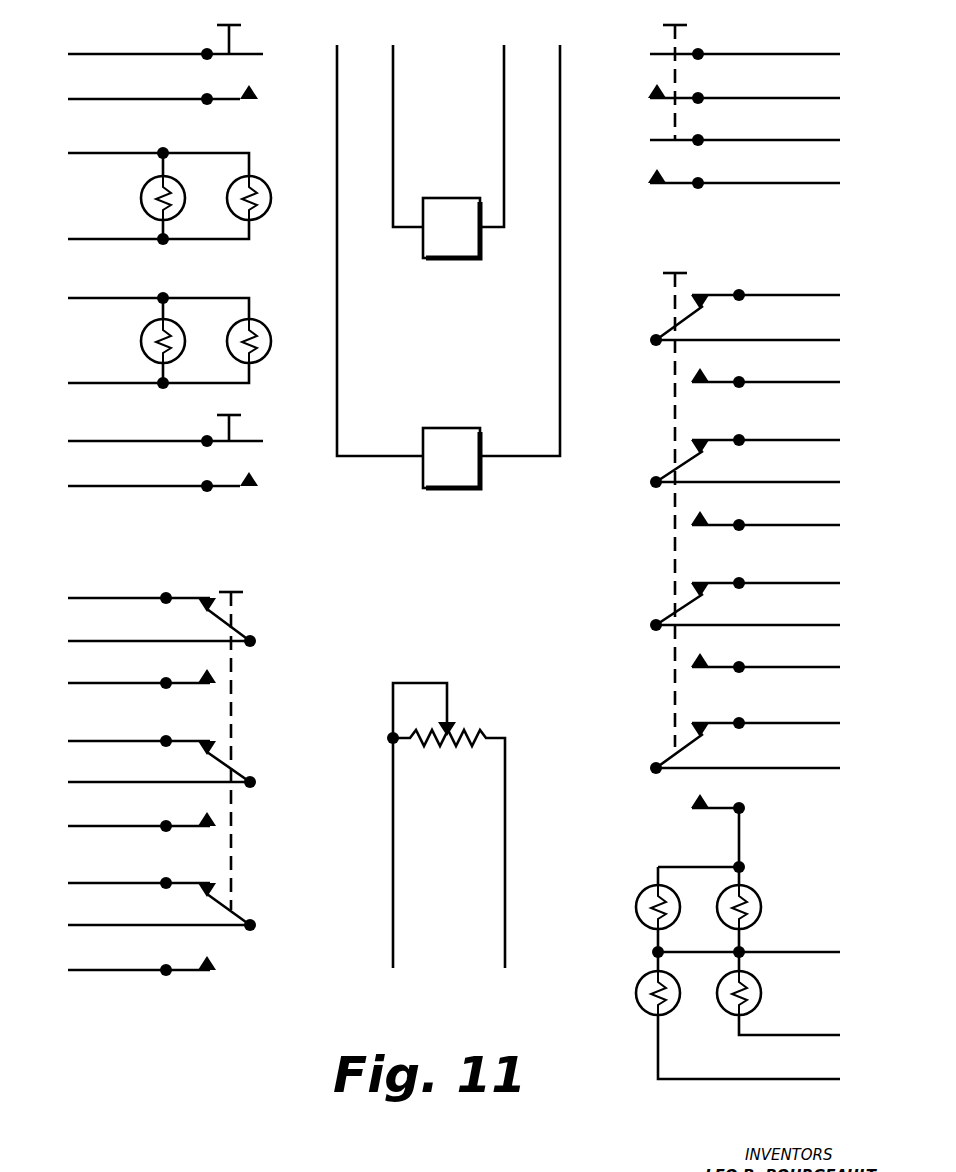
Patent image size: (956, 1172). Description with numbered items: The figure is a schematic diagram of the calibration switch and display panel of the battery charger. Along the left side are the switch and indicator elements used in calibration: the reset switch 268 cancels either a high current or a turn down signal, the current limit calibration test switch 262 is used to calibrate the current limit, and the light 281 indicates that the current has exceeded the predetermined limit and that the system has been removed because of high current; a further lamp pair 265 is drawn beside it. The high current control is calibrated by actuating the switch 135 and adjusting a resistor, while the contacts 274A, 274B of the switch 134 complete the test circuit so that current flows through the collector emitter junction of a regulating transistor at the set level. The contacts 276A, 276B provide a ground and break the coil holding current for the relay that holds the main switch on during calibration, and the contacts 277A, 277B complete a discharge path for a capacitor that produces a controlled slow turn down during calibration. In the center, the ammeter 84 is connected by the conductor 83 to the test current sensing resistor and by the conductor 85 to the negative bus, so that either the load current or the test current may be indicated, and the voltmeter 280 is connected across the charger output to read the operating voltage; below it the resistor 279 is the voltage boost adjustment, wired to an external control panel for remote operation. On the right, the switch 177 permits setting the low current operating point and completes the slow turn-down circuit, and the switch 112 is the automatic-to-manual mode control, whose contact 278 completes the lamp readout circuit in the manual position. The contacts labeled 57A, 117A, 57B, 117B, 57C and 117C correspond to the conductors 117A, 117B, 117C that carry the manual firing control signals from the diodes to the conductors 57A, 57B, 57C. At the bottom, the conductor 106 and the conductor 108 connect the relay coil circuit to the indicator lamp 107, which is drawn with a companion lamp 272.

The reset switch 268 is at (153, 86).
The light 281 is at (143, 198).
The lamp pair 265 is at (143, 341).
The current limit calibration test switch 262 is at (153, 473).
The switch 134 is at (124, 641).
The switch 135 is at (128, 727).
The contact 274A is at (237, 628).
The contact 274B is at (214, 678).
The contact 276A is at (237, 769).
The contact 276B is at (214, 822).
The contact 277A is at (237, 911).
The contact 277B is at (214, 966).
The conductor 83 is at (393, 146).
The conductor 85 is at (504, 100).
The ammeter 84 is at (460, 198).
The voltmeter 280 is at (432, 428).
The voltage boost adjustment resistor 279 is at (460, 733).
The switch 177 is at (786, 130).
The conductor 57A is at (775, 295).
The conductor 117A is at (775, 382).
The conductor 57B is at (775, 440).
The conductor 117B is at (775, 525).
The conductor 57C is at (772, 583).
The conductor 117C is at (772, 667).
The automatic-to-manual mode control switch 112 is at (803, 710).
The contact 278 is at (715, 806).
The conductor 106 is at (778, 952).
The indicator lamp 107 is at (762, 990).
The conductor 108 is at (775, 1035).
The lamp 272 is at (641, 1001).